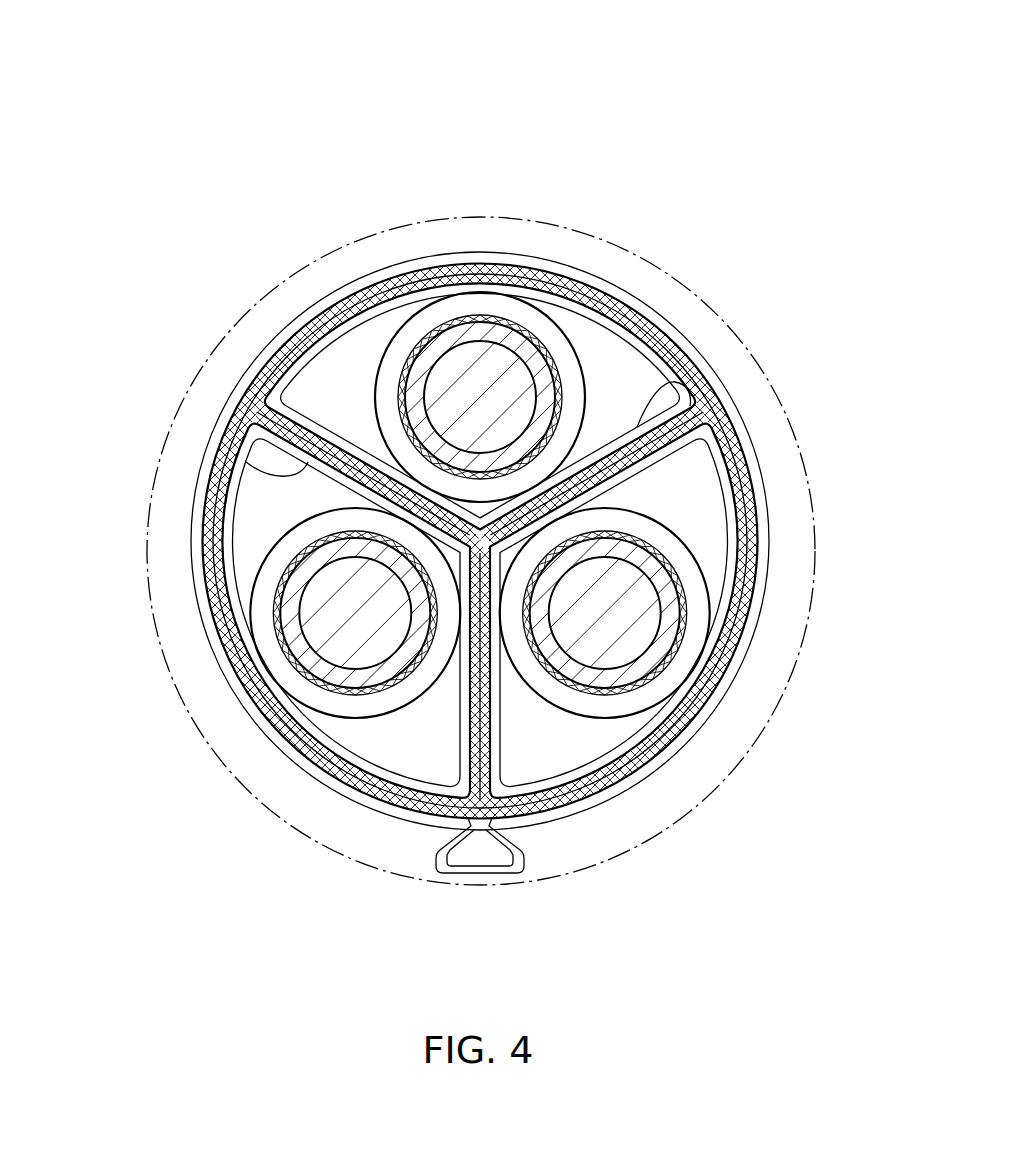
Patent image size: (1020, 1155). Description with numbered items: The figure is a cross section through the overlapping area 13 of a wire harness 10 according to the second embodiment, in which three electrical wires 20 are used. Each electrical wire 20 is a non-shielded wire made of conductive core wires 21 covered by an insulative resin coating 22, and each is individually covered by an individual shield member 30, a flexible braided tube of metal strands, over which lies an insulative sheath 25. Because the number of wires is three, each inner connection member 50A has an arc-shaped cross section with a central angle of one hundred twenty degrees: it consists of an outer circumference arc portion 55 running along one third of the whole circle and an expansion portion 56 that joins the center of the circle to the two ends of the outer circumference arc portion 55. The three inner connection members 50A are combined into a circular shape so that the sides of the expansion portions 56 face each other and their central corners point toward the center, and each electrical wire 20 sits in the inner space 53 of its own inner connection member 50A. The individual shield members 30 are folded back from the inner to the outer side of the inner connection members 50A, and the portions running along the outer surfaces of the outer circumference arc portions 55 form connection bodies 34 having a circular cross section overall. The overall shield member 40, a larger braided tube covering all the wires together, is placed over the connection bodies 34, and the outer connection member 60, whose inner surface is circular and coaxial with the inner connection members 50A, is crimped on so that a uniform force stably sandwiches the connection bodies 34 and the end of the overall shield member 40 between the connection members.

The wire harness 10 is at (493, 121).
The overlapping area 13 is at (808, 455).
The electrical wire 20 is at (480, 520).
The core wire 21 is at (480, 355).
The coating 22 is at (408, 365).
The sheath 25 is at (540, 315).
The individual shield member 30 is at (283, 330).
The connection body 34 is at (640, 330).
The overall shield member 40 is at (380, 795).
The inner connection member 50A is at (469, 290).
The inner space 53 is at (326, 400).
The outer circumference arc portion 55 is at (335, 305).
The expansion portion 56 is at (640, 425).
The outer connection member 60 is at (397, 285).